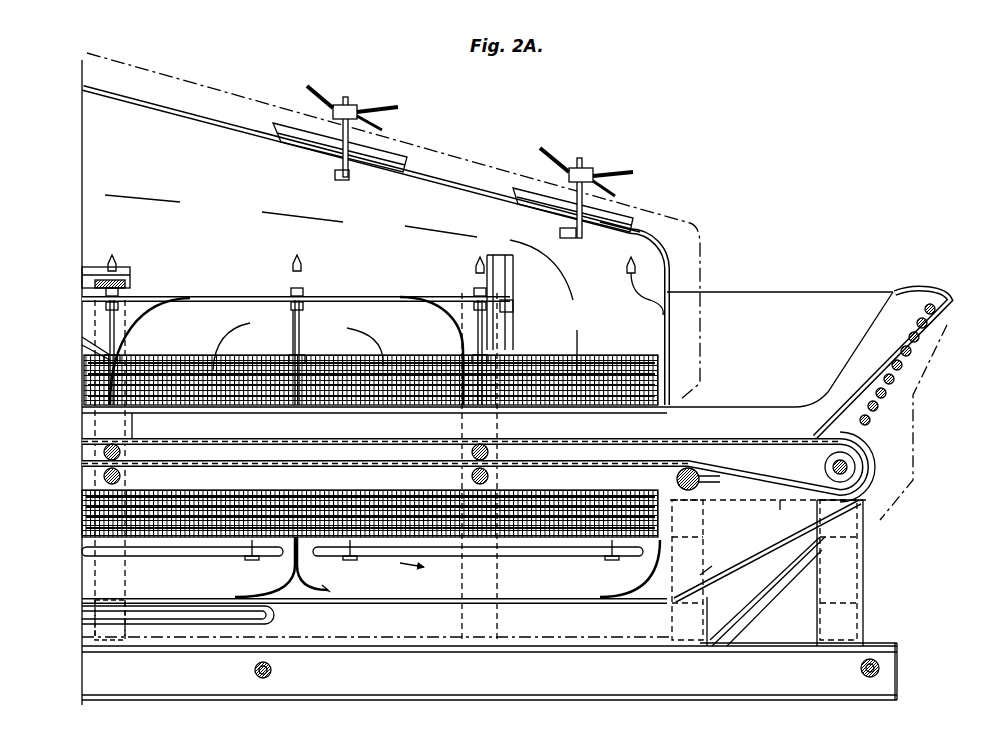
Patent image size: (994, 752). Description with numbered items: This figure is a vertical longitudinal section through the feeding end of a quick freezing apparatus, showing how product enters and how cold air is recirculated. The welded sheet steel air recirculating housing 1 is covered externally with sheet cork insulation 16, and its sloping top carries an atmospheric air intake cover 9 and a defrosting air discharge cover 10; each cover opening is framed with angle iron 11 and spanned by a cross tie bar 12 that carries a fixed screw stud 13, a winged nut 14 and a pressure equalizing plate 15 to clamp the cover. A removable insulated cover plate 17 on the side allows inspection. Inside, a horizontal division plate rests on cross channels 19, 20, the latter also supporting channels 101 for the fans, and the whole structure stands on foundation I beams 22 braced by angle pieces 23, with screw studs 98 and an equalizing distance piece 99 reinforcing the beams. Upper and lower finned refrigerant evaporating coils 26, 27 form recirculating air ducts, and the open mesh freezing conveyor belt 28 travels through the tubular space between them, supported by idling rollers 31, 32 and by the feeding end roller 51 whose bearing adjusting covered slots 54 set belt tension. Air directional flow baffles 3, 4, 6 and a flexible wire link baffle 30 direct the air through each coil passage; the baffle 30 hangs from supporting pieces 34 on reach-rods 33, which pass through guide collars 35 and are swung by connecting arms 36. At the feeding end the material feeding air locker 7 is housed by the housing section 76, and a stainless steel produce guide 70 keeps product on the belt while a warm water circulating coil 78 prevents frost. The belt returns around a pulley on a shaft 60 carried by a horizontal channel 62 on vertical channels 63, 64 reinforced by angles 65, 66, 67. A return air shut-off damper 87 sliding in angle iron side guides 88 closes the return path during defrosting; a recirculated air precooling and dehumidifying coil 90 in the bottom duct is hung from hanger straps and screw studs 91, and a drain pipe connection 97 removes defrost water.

The air recirculating housing 1 is at (200, 115).
The air directional flow baffle 3 is at (135, 313).
The air directional flow baffle 4 is at (330, 590).
The air directional flow baffle 6 is at (82, 324).
The material feeding air locker 7 is at (790, 297).
The atmospheric air intake cover 9 is at (280, 122).
The defrosting air discharge cover 10 is at (622, 198).
The angle iron 11 is at (405, 162).
The cross tie bar 12 is at (333, 168).
The fixed screw stud 13 is at (352, 97).
The winged nut 14 is at (360, 108).
The pressure equalizing plate 15 is at (383, 128).
The insulation 16 is at (690, 240).
The removable insulated cover plate 17 is at (135, 433).
The cross channel 19 is at (296, 279).
The cross channel 20 is at (130, 286).
The foundation I beam 22 is at (196, 702).
The angle piece 23 is at (97, 636).
The refrigerant air cooling evaporating coil 26 is at (195, 358).
The refrigerant air cooling evaporating coil 27 is at (205, 535).
The freezing conveyor belt 28 is at (345, 441).
The air baffle 30 is at (96, 420).
The conveyor belt supporting roller 31 is at (104, 453).
The conveyor belt supporting roller 32 is at (104, 478).
The reach-rod 33 is at (300, 340).
The supporting piece 34 is at (104, 360).
The guide collar 35 is at (108, 298).
The connecting arm 36 is at (118, 256).
The idling roller 51 is at (712, 496).
The bearing adjusting covered slot 54 is at (715, 480).
The shaft 60 is at (833, 467).
The horizontal channel 62 is at (788, 513).
The vertical channel 63 is at (700, 575).
The vertical channel 64 is at (865, 585).
The angle 65 is at (703, 530).
The angle 66 is at (857, 621).
The angle 67 is at (758, 617).
The produce guide 70 is at (588, 407).
The housing section 76 is at (775, 560).
The warm water circulating coil 78 is at (910, 355).
The return air shut-off damper 87 is at (512, 333).
The angle iron side guide 88 is at (514, 268).
The recirculated air precooling and dehumidifying coil 90 is at (205, 557).
The hanger strap and screw stud 91 is at (250, 561).
The drain pipe connection 97 is at (182, 626).
The screw stud 98 is at (255, 672).
The equalizing distance piece 99 is at (272, 669).
The channel 101 is at (122, 268).